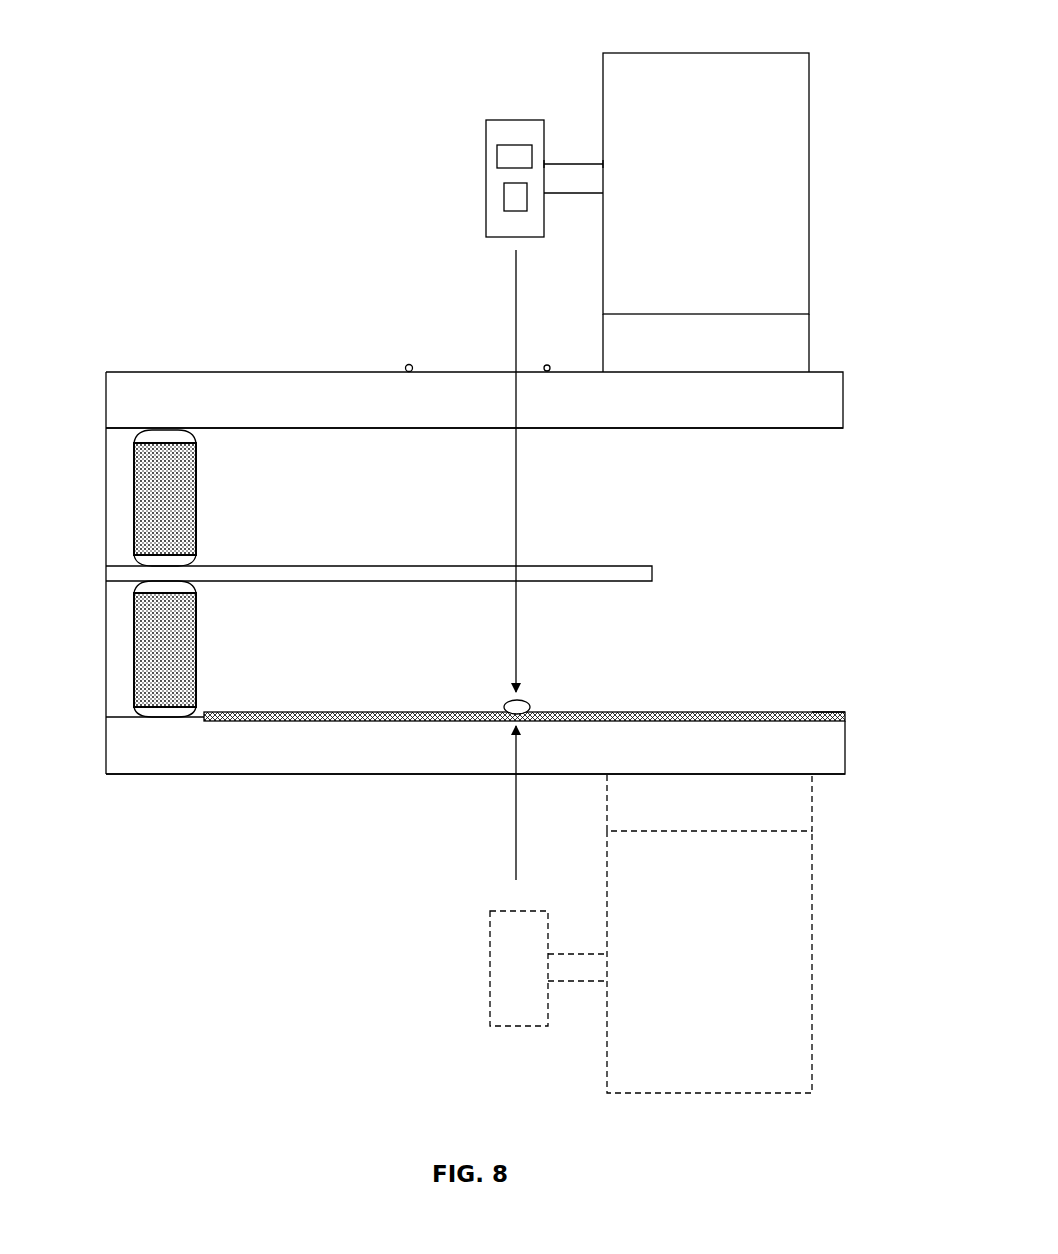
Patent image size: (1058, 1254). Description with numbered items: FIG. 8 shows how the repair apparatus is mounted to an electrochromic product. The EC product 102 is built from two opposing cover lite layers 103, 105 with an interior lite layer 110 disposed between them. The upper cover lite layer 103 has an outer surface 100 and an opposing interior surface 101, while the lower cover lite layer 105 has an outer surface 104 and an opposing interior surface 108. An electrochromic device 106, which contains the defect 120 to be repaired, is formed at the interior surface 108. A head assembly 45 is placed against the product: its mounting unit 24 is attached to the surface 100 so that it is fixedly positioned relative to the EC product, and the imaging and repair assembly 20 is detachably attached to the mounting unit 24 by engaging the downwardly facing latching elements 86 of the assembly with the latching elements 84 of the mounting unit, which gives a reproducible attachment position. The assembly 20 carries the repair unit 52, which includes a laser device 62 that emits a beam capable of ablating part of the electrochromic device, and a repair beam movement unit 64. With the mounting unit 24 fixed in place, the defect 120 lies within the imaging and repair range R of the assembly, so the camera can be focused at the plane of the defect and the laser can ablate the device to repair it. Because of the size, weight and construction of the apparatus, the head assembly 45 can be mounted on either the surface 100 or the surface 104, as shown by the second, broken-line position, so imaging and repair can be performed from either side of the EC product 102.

The head assembly 45 is at (768, 30).
The imaging and repair assembly 20 is at (794, 197).
The mounting unit 24 is at (797, 346).
The repair unit 52 is at (517, 144).
The laser device 62 is at (503, 195).
The repair beam movement unit 64 is at (582, 198).
The latching elements of the mounting unit 84 is at (601, 160).
The latching elements of the assembly 86 is at (553, 160).
The outer surface 100 is at (182, 372).
The interior surface 101 is at (274, 430).
The cover lite layer 103 is at (115, 400).
The imaging and repair range R is at (410, 364).
The EC product 102 is at (92, 624).
The interior lite layer 110 is at (570, 568).
The cover lite layer 105 is at (115, 746).
The surface 104 is at (167, 777).
The electrochromic device 106 is at (632, 712).
The interior surface 108 is at (820, 712).
The defect 120 is at (530, 700).